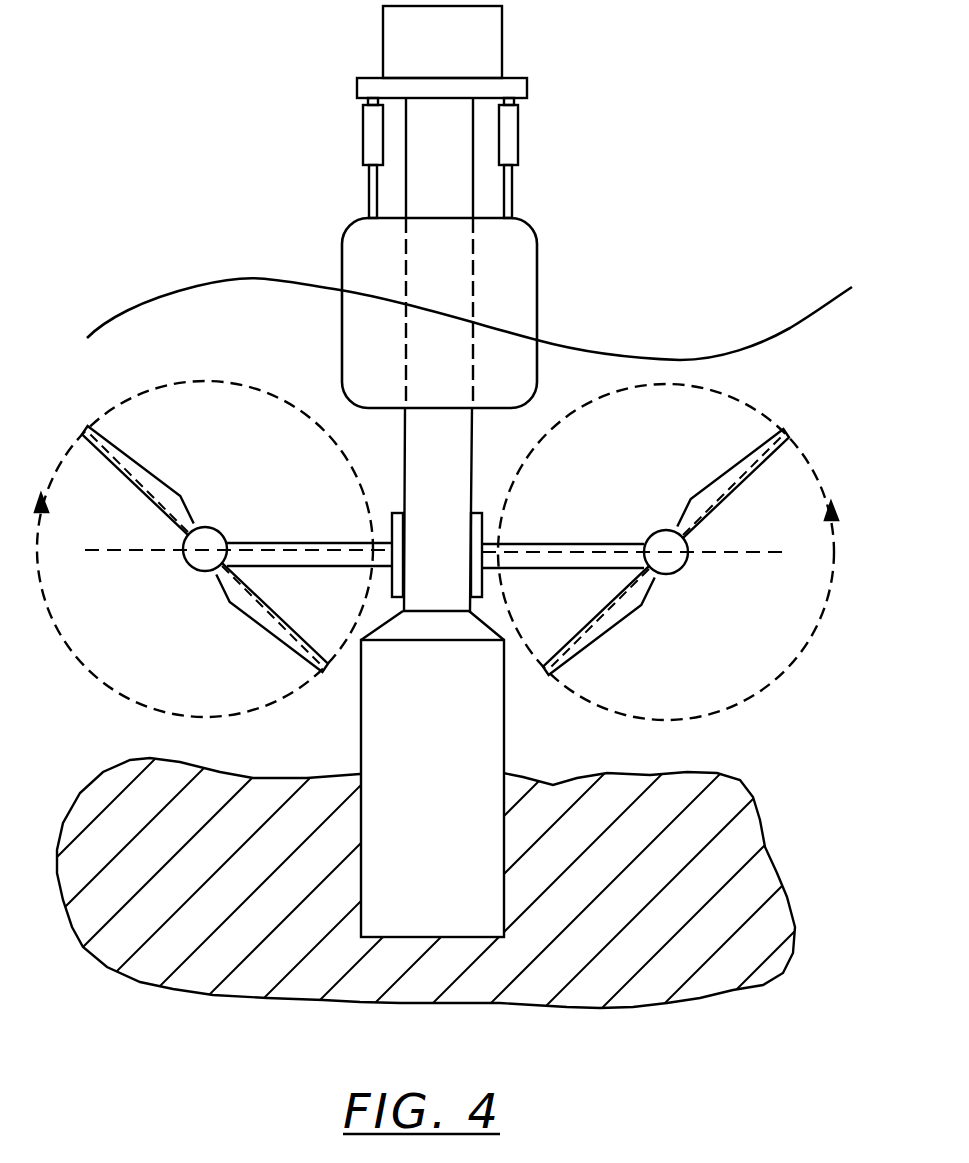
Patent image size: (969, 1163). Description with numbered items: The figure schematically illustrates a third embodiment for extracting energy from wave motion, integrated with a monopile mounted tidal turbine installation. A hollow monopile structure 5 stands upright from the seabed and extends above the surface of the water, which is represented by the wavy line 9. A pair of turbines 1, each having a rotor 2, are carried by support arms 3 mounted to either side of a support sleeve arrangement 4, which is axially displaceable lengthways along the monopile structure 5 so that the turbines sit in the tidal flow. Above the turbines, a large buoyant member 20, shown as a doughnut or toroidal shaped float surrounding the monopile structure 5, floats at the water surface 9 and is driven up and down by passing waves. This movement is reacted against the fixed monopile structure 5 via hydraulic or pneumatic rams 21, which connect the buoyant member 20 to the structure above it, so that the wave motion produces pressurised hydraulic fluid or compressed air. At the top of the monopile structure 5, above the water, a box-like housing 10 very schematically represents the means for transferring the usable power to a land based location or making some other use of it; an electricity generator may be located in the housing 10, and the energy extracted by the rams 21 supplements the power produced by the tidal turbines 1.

The turbine 1 is at (682, 574).
The rotor 2 is at (787, 458).
The support arm 3 is at (573, 543).
The support sleeve arrangement 4 is at (393, 527).
The hollow monopile structure 5 is at (405, 447).
The surface of the water 9 is at (113, 316).
The housing 10 is at (468, 63).
The buoyant member 20 is at (345, 256).
The hydraulic or pneumatic rams 21 is at (368, 135).